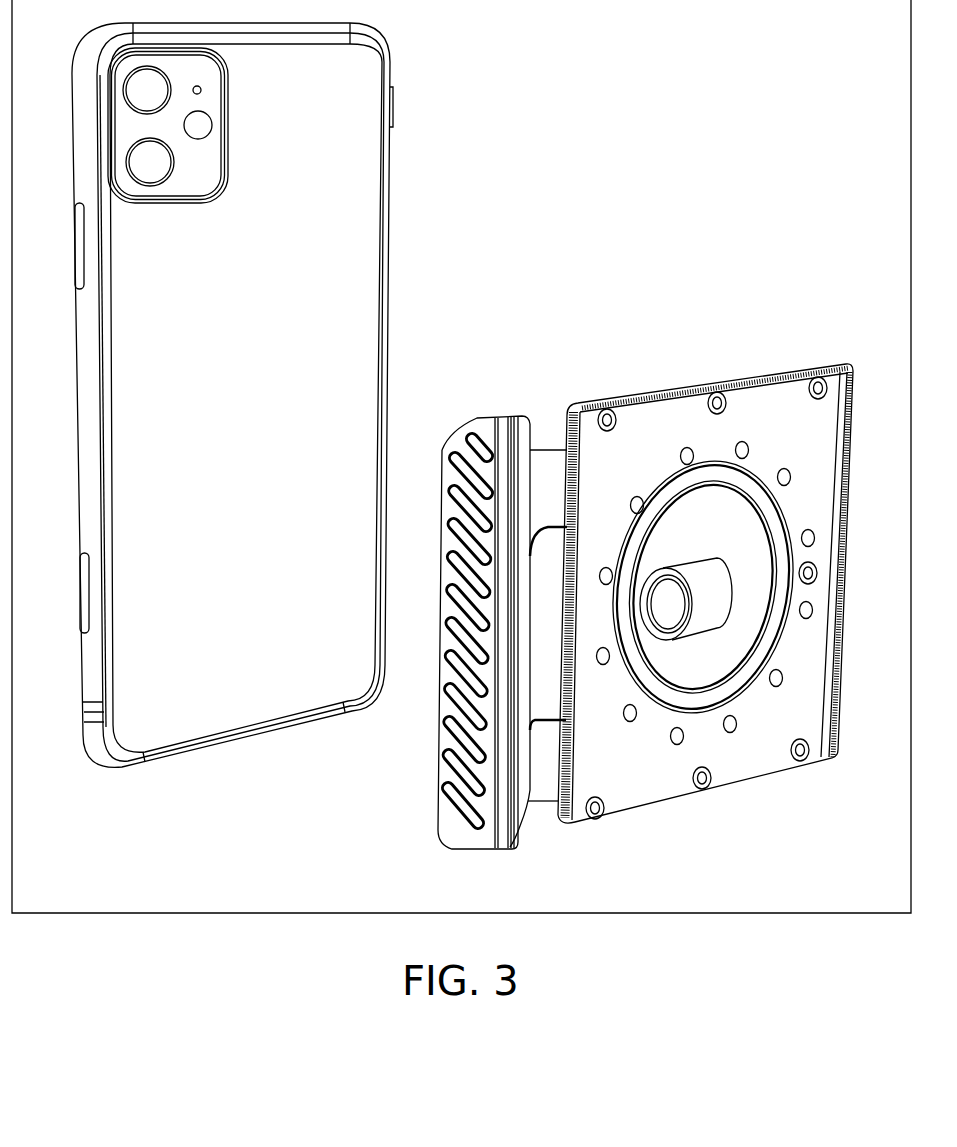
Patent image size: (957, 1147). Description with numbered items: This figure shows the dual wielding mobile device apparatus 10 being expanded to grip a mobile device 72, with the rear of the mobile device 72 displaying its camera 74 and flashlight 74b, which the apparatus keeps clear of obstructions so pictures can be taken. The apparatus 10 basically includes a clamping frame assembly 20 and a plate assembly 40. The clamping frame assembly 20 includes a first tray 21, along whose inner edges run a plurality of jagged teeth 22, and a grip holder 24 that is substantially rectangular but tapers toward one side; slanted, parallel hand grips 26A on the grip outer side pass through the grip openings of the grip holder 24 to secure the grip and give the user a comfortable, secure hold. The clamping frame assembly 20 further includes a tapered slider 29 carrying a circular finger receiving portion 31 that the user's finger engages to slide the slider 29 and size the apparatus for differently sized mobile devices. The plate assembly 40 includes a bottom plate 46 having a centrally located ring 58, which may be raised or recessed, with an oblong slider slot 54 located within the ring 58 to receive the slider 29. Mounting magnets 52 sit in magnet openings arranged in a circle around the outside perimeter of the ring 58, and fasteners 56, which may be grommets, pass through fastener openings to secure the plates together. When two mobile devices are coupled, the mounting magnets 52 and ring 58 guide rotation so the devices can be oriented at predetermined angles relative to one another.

The dual wielding mobile device apparatus 10 is at (790, 282).
The clamping frame assembly 20 is at (473, 420).
The first tray 21 is at (543, 803).
The teeth 22 is at (543, 717).
The grip holder 24 is at (467, 822).
The hand grips 26A is at (465, 779).
The slider 29 is at (710, 600).
The finger receiving portion 31 is at (675, 608).
The plate assembly 40 is at (650, 393).
The bottom plate 46 is at (820, 457).
The mounting magnets 52 is at (744, 441).
The slider slot 54 is at (733, 583).
The fasteners 56 is at (799, 761).
The ring 58 is at (713, 705).
The mobile device 72 is at (127, 395).
The camera 74 is at (138, 126).
The flashlight 74b is at (197, 127).